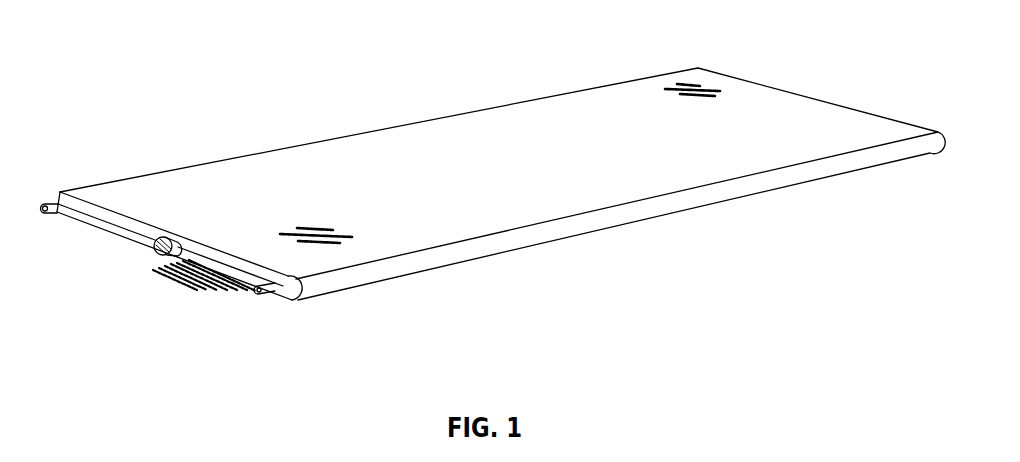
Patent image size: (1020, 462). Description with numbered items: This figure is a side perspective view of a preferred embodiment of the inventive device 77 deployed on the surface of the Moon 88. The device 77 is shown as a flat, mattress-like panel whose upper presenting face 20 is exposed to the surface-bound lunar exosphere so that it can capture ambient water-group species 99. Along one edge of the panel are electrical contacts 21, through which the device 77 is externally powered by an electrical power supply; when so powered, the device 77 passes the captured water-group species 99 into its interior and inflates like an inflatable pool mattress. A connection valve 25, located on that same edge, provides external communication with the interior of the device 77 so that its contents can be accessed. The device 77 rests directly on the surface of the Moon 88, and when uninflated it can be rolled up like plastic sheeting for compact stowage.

The presenting face 20 is at (782, 103).
The electrical contacts 21 is at (57, 215).
The connection valve 25 is at (152, 238).
The inventive device 77 is at (321, 93).
The surface of the Moon 88 is at (149, 311).
The water-group species 99 is at (494, 48).